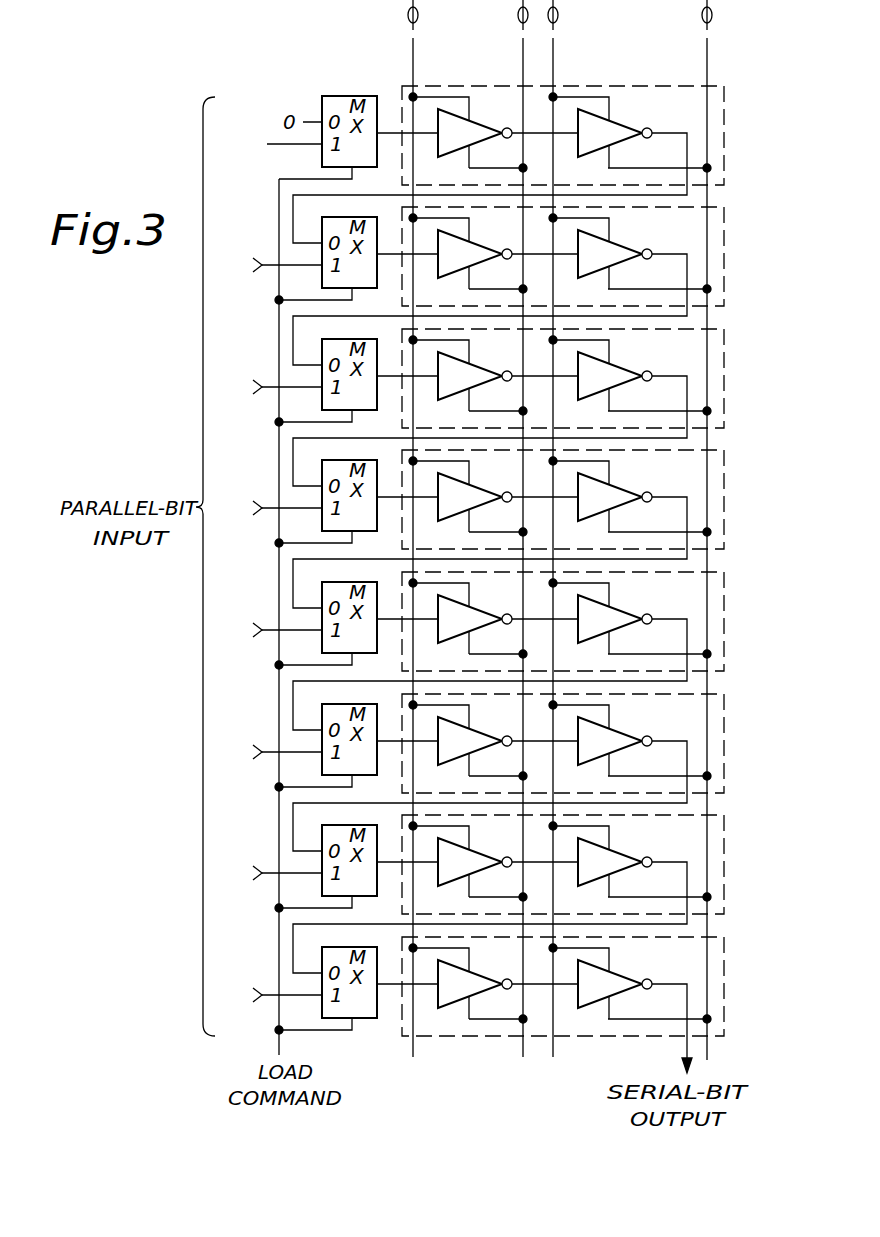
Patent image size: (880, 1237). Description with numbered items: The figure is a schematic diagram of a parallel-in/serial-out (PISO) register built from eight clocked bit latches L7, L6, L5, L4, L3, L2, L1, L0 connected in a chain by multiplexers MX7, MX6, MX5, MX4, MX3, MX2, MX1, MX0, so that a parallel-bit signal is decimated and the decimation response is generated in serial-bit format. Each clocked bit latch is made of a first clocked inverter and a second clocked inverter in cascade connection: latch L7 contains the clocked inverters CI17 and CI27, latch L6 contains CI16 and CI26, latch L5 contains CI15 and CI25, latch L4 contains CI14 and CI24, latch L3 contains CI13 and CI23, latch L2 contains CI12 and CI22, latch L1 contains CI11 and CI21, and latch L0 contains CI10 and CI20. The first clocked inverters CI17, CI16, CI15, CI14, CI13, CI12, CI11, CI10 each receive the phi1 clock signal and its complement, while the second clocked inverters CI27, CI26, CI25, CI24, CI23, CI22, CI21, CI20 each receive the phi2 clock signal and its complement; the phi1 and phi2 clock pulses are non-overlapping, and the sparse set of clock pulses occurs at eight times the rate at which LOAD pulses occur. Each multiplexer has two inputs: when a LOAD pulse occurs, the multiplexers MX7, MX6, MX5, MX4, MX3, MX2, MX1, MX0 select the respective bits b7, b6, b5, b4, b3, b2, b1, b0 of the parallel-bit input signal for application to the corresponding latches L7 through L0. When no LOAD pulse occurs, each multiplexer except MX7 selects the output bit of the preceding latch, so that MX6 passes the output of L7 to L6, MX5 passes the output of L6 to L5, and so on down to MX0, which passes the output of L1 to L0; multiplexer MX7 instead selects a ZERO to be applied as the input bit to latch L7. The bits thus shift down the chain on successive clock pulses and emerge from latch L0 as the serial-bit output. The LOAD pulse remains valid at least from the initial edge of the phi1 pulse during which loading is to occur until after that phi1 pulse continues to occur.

The clocked bit latch L7 is at (724, 152).
The clocked bit latch L6 is at (724, 273).
The clocked bit latch L5 is at (724, 395).
The clocked bit latch L4 is at (724, 516).
The clocked bit latch L3 is at (724, 638).
The clocked bit latch L2 is at (724, 760).
The clocked bit latch L1 is at (724, 881).
The clocked bit latch L0 is at (724, 1003).
The first clocked inverter CI17 is at (496, 111).
The first clocked inverter CI16 is at (496, 232).
The first clocked inverter CI15 is at (496, 354).
The first clocked inverter CI14 is at (496, 475).
The first clocked inverter CI13 is at (496, 597).
The first clocked inverter CI12 is at (496, 719).
The first clocked inverter CI11 is at (496, 840).
The first clocked inverter CI10 is at (496, 962).
The second clocked inverter CI27 is at (628, 124).
The second clocked inverter CI26 is at (628, 245).
The second clocked inverter CI25 is at (628, 367).
The second clocked inverter CI24 is at (628, 488).
The second clocked inverter CI23 is at (628, 610).
The second clocked inverter CI22 is at (628, 732).
The second clocked inverter CI21 is at (628, 853).
The second clocked inverter CI20 is at (628, 975).
The multiplexer MX7 is at (349, 130).
The multiplexer MX6 is at (349, 251).
The multiplexer MX5 is at (349, 373).
The multiplexer MX4 is at (349, 494).
The multiplexer MX3 is at (349, 616).
The multiplexer MX2 is at (349, 738).
The multiplexer MX1 is at (349, 859).
The multiplexer MX0 is at (349, 981).
The bit of the parallel-bit input signal b7 is at (243, 148).
The bit of the parallel-bit input signal b6 is at (233, 265).
The bit of the parallel-bit input signal b5 is at (233, 387).
The bit of the parallel-bit input signal b4 is at (233, 508).
The bit of the parallel-bit input signal b3 is at (233, 630).
The bit of the parallel-bit input signal b2 is at (233, 752).
The bit of the parallel-bit input signal b1 is at (233, 873).
The bit of the parallel-bit input signal b0 is at (233, 995).
The clock signal phi1 is at (475, 528).
The clock signal phi2 is at (637, 530).